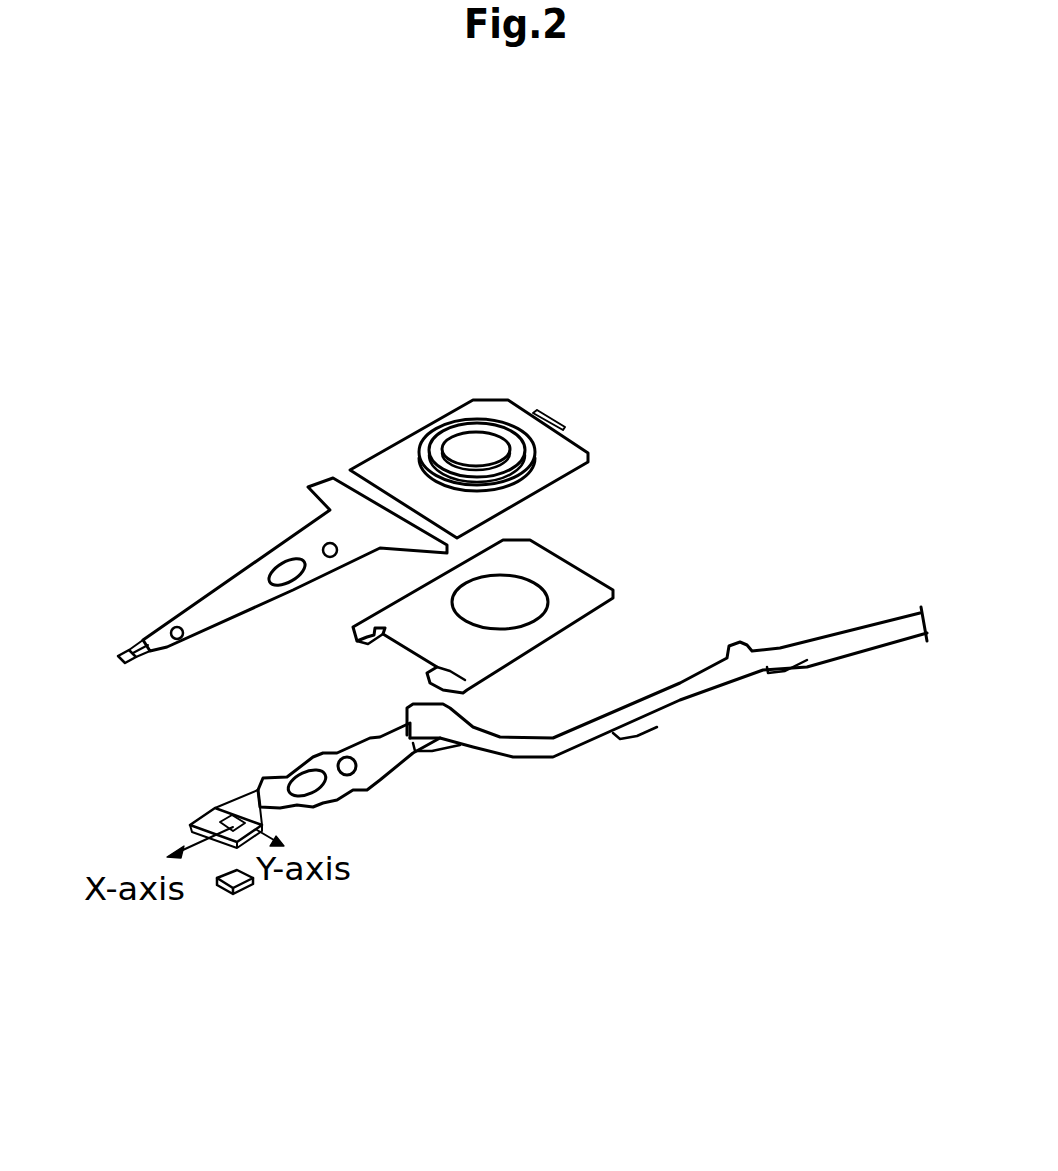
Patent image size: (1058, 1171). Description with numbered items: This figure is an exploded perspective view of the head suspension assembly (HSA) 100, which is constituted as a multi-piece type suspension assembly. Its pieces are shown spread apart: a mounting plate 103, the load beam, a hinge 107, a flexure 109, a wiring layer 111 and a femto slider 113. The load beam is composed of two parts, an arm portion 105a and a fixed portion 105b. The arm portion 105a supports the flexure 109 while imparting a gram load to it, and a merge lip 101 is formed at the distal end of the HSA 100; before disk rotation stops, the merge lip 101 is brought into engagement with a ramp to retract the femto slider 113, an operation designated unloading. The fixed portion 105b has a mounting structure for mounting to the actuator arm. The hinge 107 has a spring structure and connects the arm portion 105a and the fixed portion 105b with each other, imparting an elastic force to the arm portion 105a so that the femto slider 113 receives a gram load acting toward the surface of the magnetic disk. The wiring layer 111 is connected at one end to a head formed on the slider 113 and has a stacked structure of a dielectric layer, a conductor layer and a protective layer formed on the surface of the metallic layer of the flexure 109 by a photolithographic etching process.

The head suspension assembly 100 is at (733, 428).
The merge lip 101 is at (127, 650).
The mounting plate 103 is at (450, 423).
The arm portion of load beam 105a is at (249, 556).
The fixed portion of load beam 105b is at (449, 418).
The hinge 107 is at (570, 560).
The flexure 109 is at (343, 780).
The wiring layer 111 is at (680, 703).
The femto slider 113 is at (227, 897).